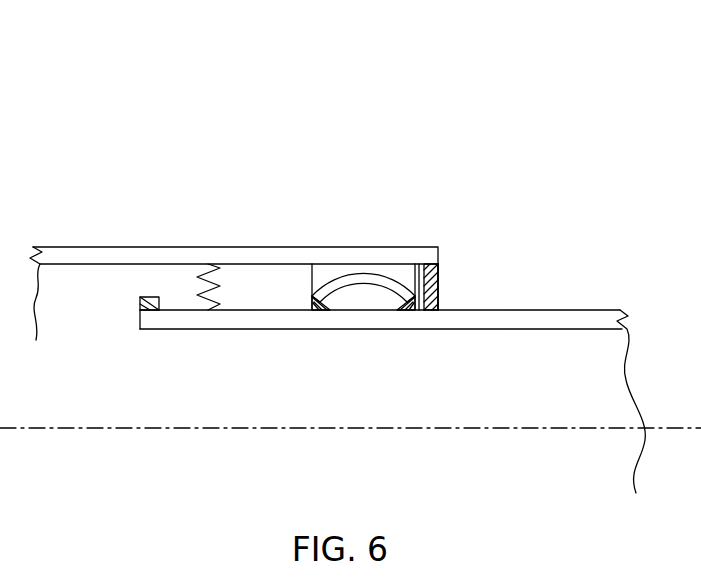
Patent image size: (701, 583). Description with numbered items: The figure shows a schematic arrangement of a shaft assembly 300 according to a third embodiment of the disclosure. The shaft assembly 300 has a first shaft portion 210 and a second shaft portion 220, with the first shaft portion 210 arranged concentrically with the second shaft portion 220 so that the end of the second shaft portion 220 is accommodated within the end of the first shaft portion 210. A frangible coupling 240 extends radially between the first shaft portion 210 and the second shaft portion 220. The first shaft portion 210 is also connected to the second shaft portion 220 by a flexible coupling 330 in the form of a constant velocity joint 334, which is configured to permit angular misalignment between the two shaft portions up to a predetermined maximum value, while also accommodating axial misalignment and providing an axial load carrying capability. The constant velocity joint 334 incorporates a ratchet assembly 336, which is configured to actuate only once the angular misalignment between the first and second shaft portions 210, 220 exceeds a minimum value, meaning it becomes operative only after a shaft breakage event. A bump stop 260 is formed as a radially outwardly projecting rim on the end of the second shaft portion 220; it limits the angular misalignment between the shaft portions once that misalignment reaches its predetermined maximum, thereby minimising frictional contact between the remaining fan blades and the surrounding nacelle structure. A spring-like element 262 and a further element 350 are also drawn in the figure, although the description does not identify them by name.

The shaft assembly 300 is at (459, 97).
The first shaft portion 210 is at (97, 247).
The second shaft portion 220 is at (570, 309).
The bump stop 260 is at (153, 297).
The spring 262 is at (221, 264).
The flexible coupling 330 is at (330, 288).
The lens 350 is at (365, 283).
The constant velocity joint 334 is at (385, 283).
The ratchet assembly 336 is at (310, 294).
The frangible coupling 240 is at (440, 297).